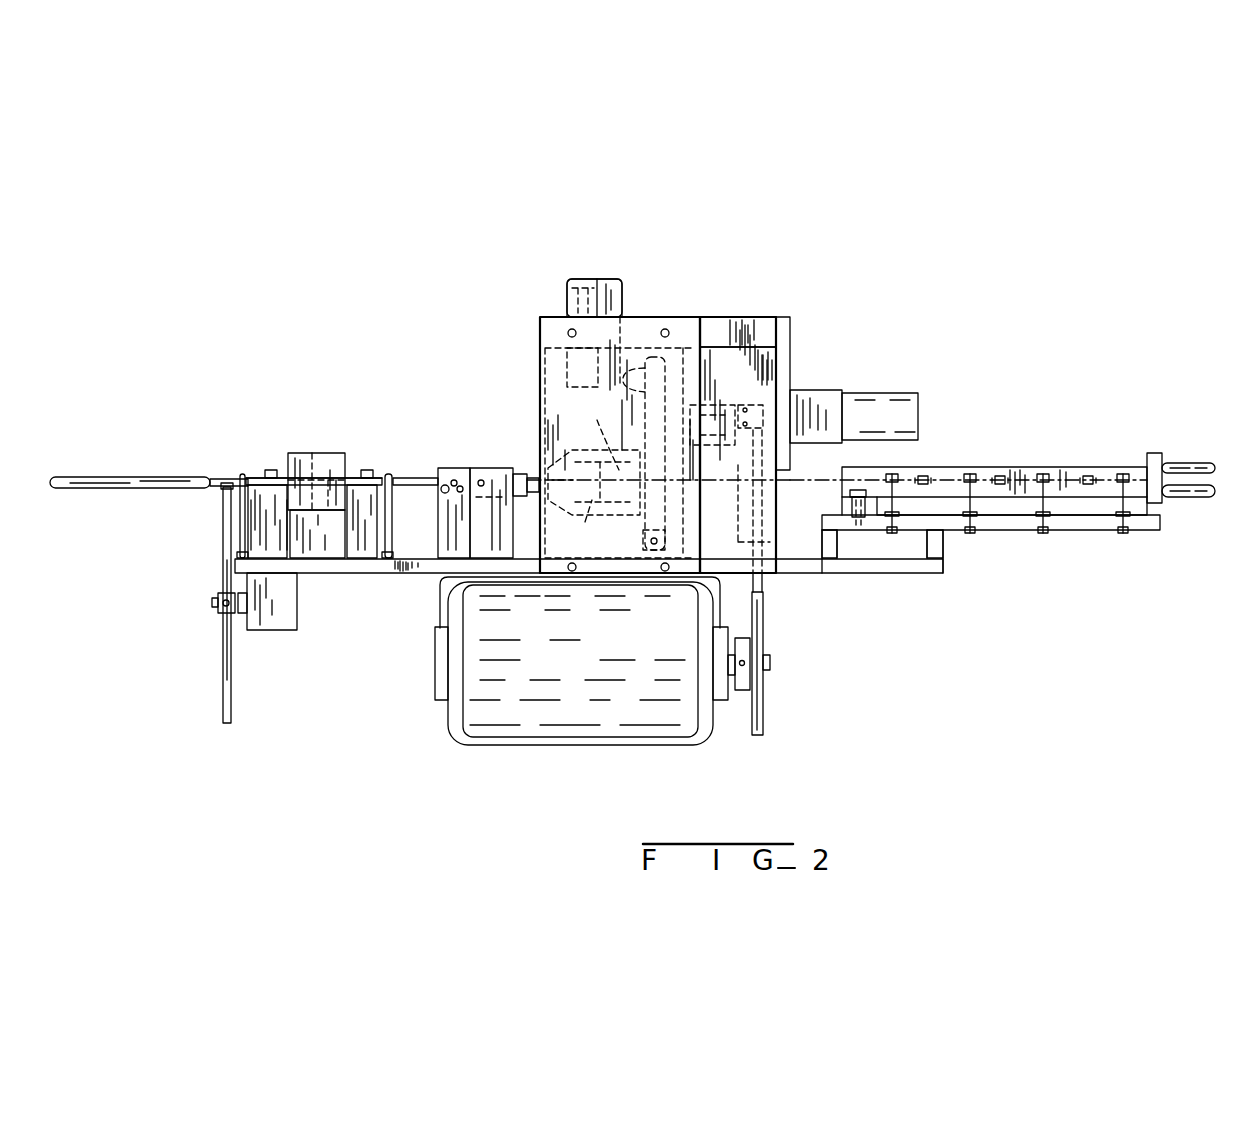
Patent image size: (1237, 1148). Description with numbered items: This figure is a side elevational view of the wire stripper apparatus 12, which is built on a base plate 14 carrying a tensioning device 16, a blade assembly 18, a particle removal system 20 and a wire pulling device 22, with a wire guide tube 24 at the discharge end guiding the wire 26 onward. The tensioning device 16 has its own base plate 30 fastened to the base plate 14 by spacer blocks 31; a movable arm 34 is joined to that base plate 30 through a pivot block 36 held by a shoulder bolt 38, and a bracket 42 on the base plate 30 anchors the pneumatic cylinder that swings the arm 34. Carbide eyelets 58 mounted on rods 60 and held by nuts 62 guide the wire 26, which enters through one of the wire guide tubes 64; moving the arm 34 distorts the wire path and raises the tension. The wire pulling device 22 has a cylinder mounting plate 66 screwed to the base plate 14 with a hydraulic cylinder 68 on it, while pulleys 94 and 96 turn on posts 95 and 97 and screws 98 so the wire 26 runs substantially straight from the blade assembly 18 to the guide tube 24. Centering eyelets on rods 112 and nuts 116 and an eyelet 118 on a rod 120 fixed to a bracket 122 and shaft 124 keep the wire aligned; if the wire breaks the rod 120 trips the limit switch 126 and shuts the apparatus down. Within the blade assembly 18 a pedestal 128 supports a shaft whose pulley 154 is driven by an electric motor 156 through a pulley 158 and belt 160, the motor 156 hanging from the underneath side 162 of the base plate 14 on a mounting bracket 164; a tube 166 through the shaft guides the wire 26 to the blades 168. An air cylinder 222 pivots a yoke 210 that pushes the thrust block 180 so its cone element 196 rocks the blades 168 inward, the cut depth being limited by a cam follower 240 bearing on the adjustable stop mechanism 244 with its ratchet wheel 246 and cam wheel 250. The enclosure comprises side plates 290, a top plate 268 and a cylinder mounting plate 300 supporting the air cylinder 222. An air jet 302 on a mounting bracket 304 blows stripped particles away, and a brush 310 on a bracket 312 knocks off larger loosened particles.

The wire stripper apparatus 12 is at (918, 280).
The base plate 14 is at (935, 565).
The tensioning device 16 is at (1028, 428).
The blade assembly 18 is at (728, 302).
The particle removal system 20 is at (496, 392).
The wire pulling device 22 is at (306, 408).
The wire guide tube 24 is at (104, 482).
The wire 26 is at (417, 480).
The base plate 30 is at (1157, 518).
The spacer blocks 31 is at (834, 545).
The movable arm 34 is at (1128, 472).
The pivot block 36 is at (850, 510).
The shoulder bolt 38 is at (857, 490).
The bracket 42 is at (1155, 453).
The carbide eyelets 58 is at (900, 452).
The rods 60 is at (922, 476).
The nuts 62 is at (893, 533).
The wire guide tubes 64 is at (1201, 463).
The cylinder mounting plate 66 is at (326, 543).
The hydraulic cylinder 68 is at (330, 460).
The pulley 94 is at (254, 485).
The post 95 is at (263, 520).
The pulley 96 is at (372, 486).
The post 97 is at (392, 518).
The screws 98 is at (272, 470).
The rods 112 is at (241, 513).
The nuts 116 is at (237, 555).
The eyelet 118 is at (224, 483).
The rod 120 is at (223, 671).
The bracket 122 is at (219, 611).
The shaft 124 is at (218, 601).
The limit switch 126 is at (283, 610).
The pedestal 128 is at (770, 543).
The pulley 154 is at (750, 412).
The electric motor 156 is at (667, 740).
The pulley 158 is at (745, 690).
The belt 160 is at (760, 580).
The underneath side 162 is at (405, 563).
The mounting bracket 164 is at (438, 598).
The tube 166 is at (588, 522).
The blades 168 is at (593, 430).
The thrust block 180 is at (642, 520).
The cone element 196 is at (644, 468).
The yoke 210 is at (663, 452).
The air cylinder 222 is at (833, 392).
The cam follower 240 is at (630, 371).
The adjustable stop mechanism 244 is at (597, 266).
The ratchet wheel 246 is at (576, 275).
The cam wheel 250 is at (609, 295).
The top plate 268 is at (748, 330).
The side plates 290 is at (763, 370).
The cylinder mounting plate 300 is at (783, 355).
The air jet 302 is at (532, 478).
The mounting bracket 304 is at (500, 476).
The brush 310 is at (454, 480).
The bracket 312 is at (443, 487).